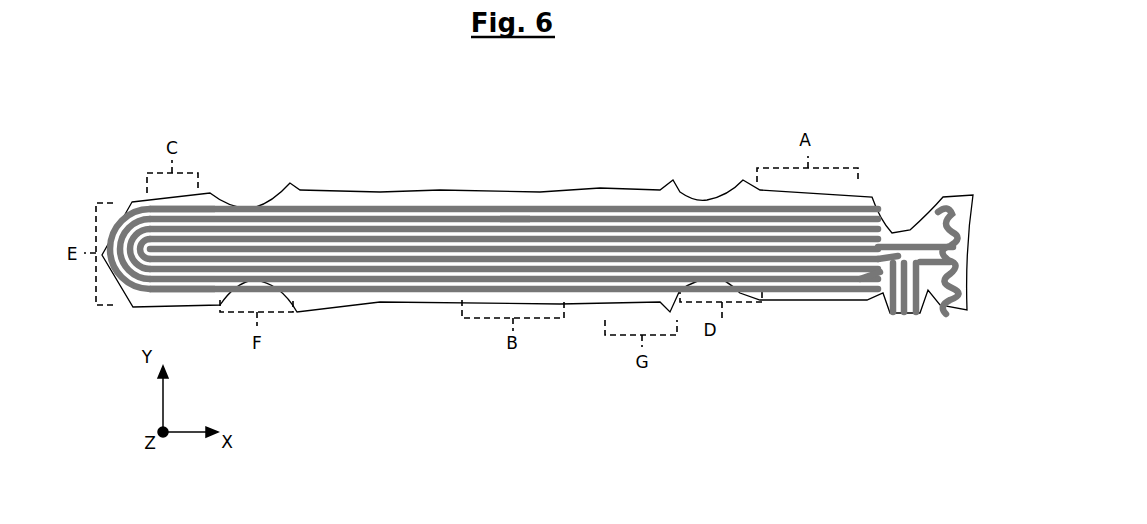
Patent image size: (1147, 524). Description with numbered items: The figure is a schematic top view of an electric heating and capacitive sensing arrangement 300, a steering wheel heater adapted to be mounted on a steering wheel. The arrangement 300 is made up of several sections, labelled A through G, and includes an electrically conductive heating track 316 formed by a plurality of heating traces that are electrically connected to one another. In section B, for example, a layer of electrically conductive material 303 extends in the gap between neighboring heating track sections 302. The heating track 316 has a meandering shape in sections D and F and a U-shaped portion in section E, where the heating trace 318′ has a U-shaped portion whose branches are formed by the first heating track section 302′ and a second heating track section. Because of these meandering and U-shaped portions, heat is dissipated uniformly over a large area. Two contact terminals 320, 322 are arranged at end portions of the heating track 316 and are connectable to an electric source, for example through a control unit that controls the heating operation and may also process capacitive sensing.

The electric heating and capacitive sensing arrangement 300 is at (211, 113).
The heating track section 302 is at (497, 210).
The first heating track section 302′ is at (162, 293).
The layer of electrically conductive material 303 is at (515, 218).
The electrically conductive heating track 316 is at (918, 295).
The heating trace 318′ is at (875, 278).
The contact terminal 320 is at (896, 305).
The contact terminal 322 is at (920, 310).